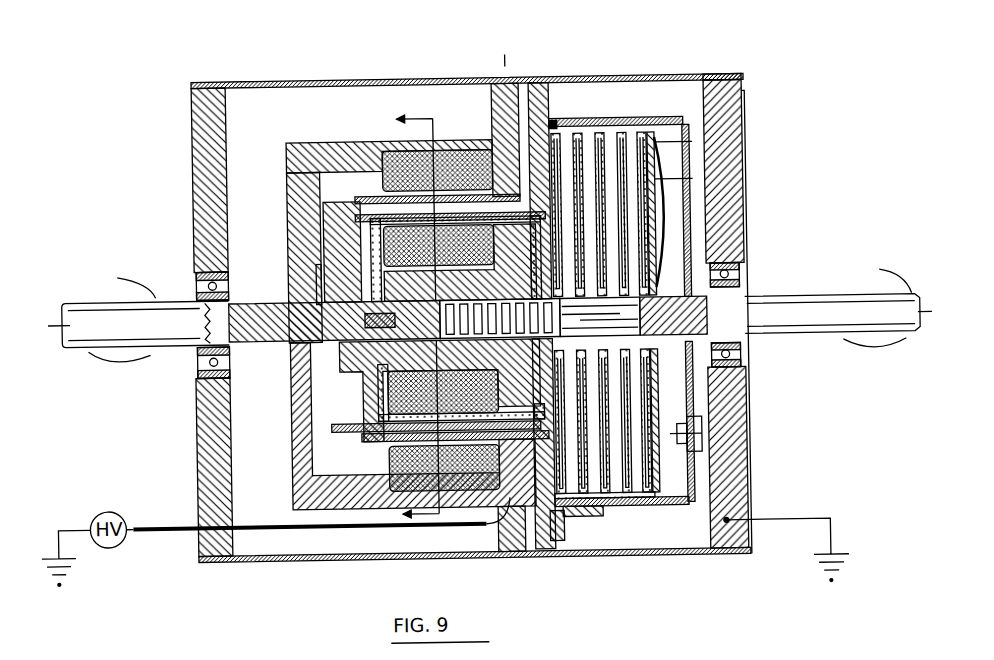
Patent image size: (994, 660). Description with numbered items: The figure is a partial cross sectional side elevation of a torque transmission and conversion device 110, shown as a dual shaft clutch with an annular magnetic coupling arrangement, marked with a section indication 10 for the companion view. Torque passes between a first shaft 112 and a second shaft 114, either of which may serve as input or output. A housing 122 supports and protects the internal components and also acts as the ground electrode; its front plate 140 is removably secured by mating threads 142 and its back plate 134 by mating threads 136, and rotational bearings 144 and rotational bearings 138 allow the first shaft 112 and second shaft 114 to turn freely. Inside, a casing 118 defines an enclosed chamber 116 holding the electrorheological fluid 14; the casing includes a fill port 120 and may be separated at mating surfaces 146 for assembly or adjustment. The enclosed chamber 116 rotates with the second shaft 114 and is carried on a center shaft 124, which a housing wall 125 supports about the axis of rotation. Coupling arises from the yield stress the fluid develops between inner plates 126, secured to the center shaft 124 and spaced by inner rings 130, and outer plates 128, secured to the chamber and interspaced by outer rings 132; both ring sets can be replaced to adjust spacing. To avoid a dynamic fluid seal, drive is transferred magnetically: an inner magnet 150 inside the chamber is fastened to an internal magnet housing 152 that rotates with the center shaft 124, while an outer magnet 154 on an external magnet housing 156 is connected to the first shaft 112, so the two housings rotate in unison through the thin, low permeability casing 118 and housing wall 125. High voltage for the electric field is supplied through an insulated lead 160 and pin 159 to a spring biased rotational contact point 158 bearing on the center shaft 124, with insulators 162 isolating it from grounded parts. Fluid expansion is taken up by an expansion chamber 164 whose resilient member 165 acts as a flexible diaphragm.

The torque transmission and conversion device 110 is at (94, 85).
The first shaft 112 is at (106, 300).
The second shaft 114 is at (848, 292).
The enclosed chamber 116 is at (574, 542).
The casing 118 is at (590, 122).
The fill port 120 is at (700, 443).
The housing 122 is at (274, 559).
The center shaft 124 is at (323, 212).
The housing wall 125 is at (503, 93).
The inner plates 126 is at (678, 515).
The outer plates 128 is at (622, 515).
The inner rings 130 is at (678, 349).
The outer rings 132 is at (590, 515).
The back plate 134 is at (748, 112).
The mating threads 136 is at (716, 76).
The rotational bearings 138 is at (740, 278).
The front plate 140 is at (195, 126).
The mating threads 142 is at (228, 84).
The rotational bearings 144 is at (197, 276).
The mating surfaces 146 is at (543, 84).
The inner magnet 150 is at (305, 470).
The internal magnet housing 152 is at (306, 398).
The outer magnet 154 is at (385, 158).
The external magnet housing 156 is at (312, 140).
The rotational contact point 158 is at (322, 274).
The pin 159 is at (328, 296).
The insulated lead 160 is at (280, 524).
The insulators 162 is at (700, 247).
The expansion chamber 164 is at (660, 146).
The resilient member 165 is at (660, 183).
The section line 10 is at (401, 312).
The electrorheological fluid 14 is at (594, 121).